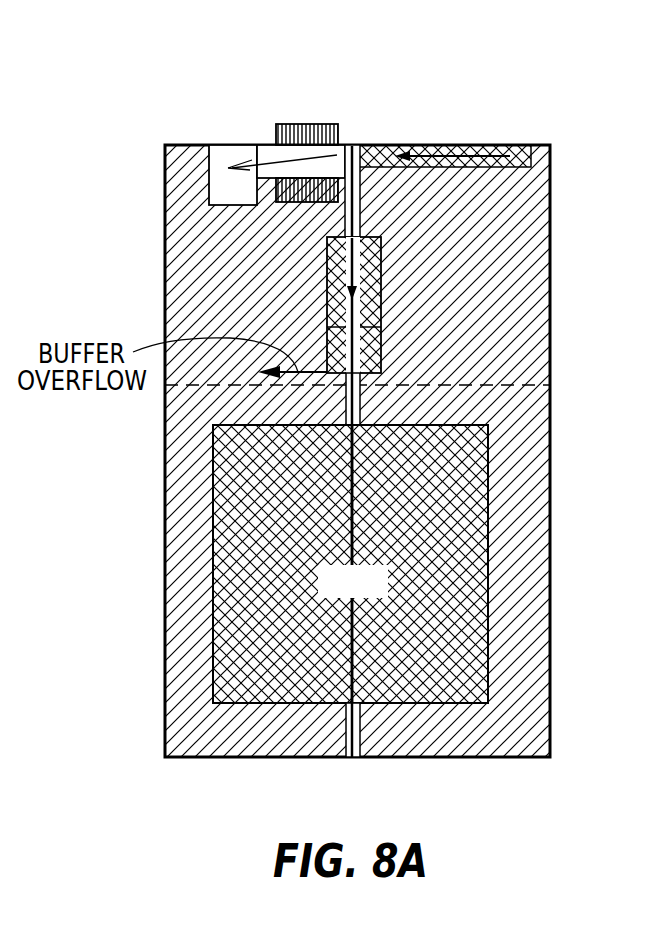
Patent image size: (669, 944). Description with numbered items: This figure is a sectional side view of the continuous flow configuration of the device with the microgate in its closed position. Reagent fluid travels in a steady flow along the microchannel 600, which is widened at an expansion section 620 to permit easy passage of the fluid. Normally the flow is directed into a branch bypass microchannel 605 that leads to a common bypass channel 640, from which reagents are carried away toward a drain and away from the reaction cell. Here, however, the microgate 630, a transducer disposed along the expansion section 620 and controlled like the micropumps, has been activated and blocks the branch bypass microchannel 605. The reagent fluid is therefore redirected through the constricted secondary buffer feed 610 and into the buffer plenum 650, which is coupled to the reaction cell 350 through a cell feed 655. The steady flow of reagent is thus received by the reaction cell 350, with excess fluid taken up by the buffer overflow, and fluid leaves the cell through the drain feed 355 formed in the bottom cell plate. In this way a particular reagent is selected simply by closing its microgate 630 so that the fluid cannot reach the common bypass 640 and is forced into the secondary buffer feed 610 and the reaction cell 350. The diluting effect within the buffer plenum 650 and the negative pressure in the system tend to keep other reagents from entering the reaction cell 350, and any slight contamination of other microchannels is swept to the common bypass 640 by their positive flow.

The microchannel 600 is at (455, 150).
The branch bypass microchannel 605 is at (264, 157).
The constricted secondary buffer feed 610 is at (362, 199).
The expansion section 620 is at (366, 160).
The microgate 630 is at (333, 124).
The common bypass channel 640 is at (218, 155).
The buffer plenum 650 is at (373, 346).
The cell feed 655 is at (357, 405).
The reaction cell 350 is at (488, 577).
The drain feed 355 is at (360, 737).